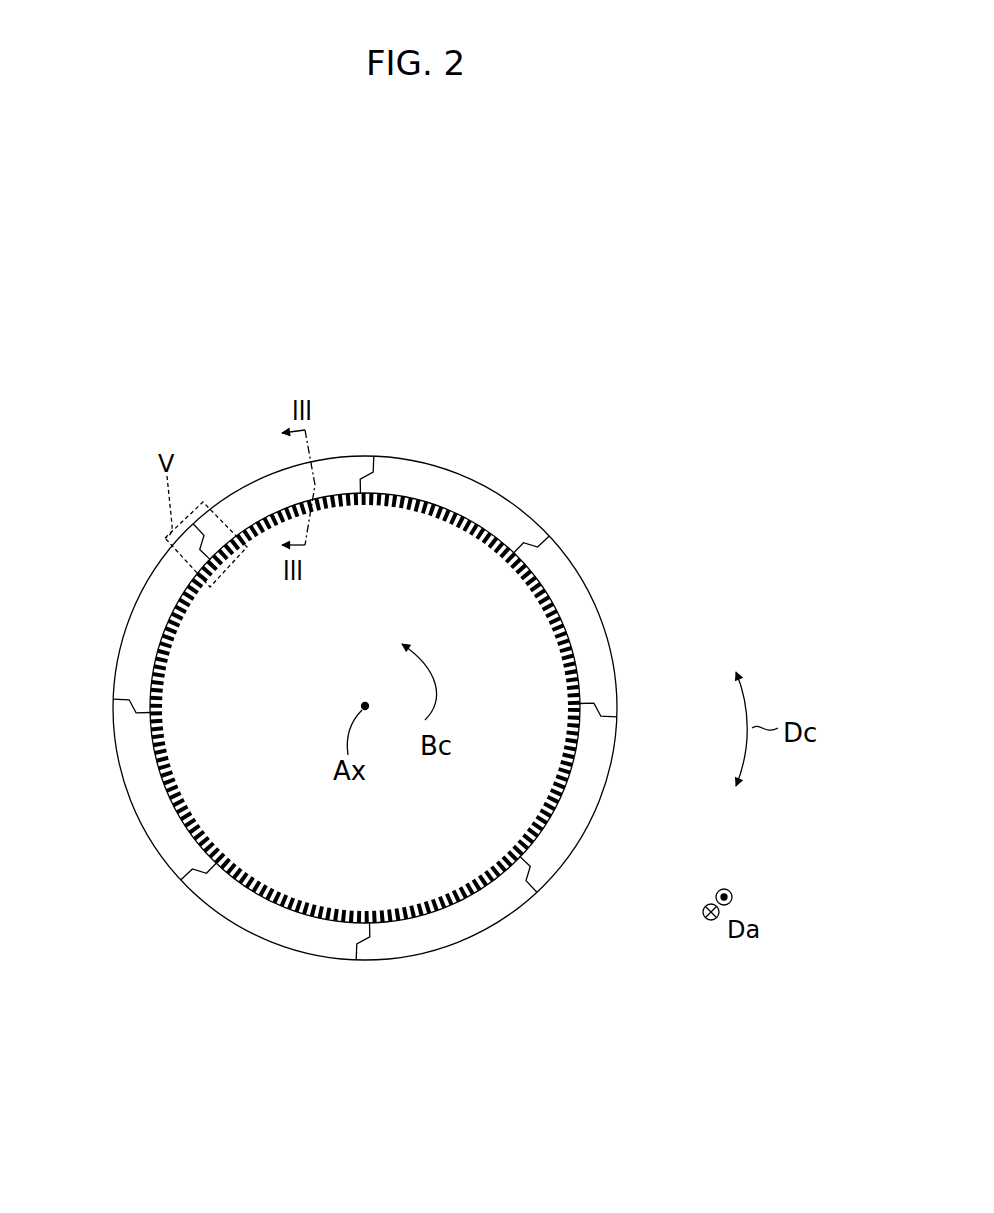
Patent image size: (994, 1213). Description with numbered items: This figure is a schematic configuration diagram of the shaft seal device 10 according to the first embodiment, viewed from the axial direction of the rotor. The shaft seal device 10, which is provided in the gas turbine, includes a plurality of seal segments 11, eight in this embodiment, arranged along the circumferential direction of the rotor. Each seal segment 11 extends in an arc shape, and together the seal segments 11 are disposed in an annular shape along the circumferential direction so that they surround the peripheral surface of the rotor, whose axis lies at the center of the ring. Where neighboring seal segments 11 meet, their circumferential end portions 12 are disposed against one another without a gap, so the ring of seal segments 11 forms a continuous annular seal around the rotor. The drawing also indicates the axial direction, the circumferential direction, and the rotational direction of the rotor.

The shaft seal device 10 is at (646, 467).
The seal segment 11 is at (276, 468).
The circumferential end portion 12 is at (211, 565).